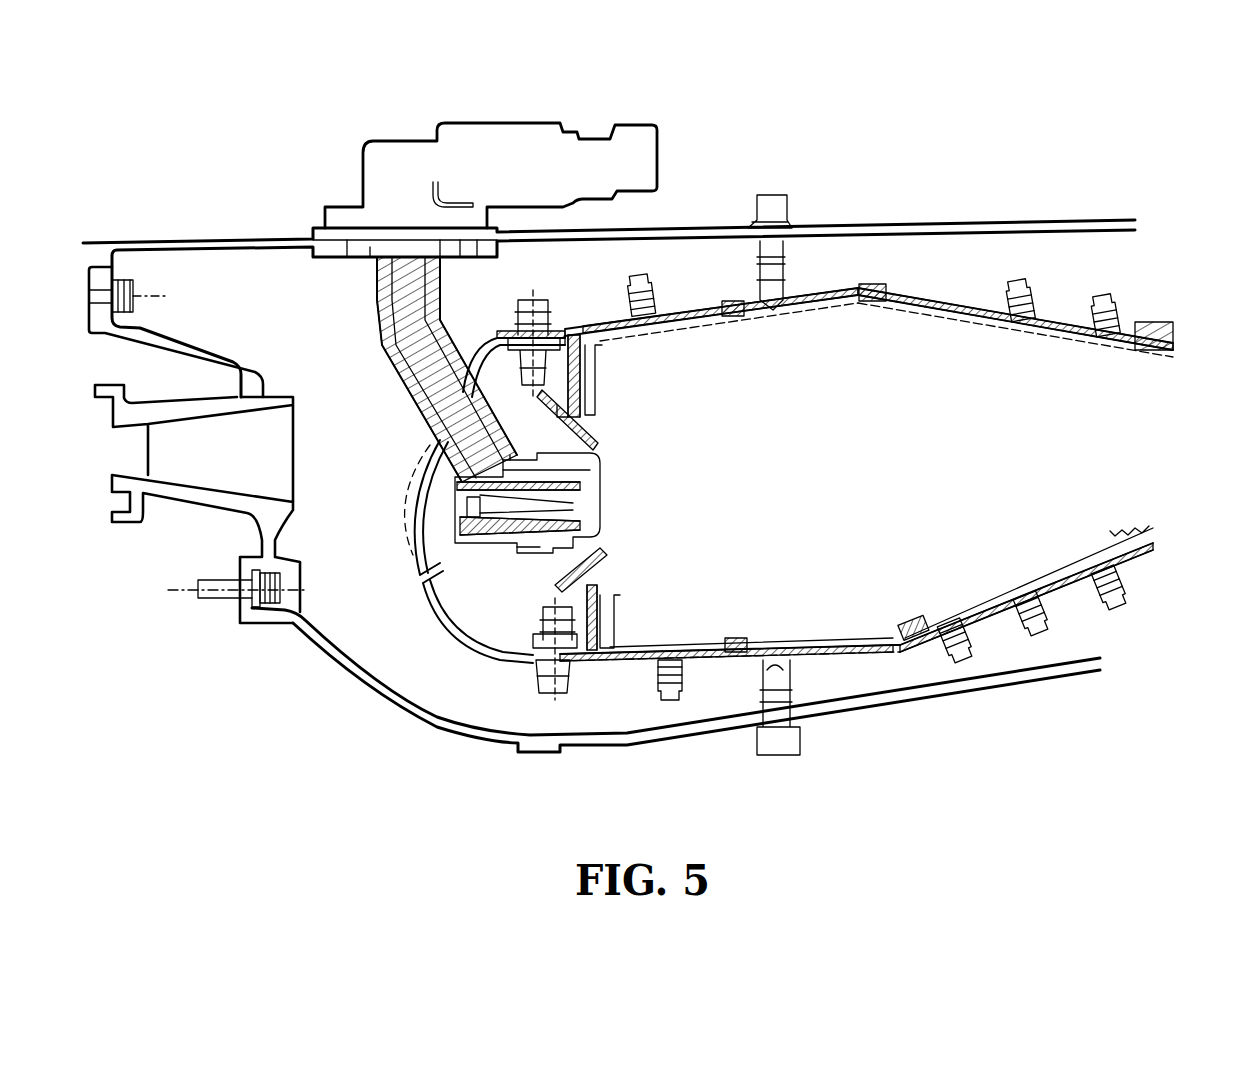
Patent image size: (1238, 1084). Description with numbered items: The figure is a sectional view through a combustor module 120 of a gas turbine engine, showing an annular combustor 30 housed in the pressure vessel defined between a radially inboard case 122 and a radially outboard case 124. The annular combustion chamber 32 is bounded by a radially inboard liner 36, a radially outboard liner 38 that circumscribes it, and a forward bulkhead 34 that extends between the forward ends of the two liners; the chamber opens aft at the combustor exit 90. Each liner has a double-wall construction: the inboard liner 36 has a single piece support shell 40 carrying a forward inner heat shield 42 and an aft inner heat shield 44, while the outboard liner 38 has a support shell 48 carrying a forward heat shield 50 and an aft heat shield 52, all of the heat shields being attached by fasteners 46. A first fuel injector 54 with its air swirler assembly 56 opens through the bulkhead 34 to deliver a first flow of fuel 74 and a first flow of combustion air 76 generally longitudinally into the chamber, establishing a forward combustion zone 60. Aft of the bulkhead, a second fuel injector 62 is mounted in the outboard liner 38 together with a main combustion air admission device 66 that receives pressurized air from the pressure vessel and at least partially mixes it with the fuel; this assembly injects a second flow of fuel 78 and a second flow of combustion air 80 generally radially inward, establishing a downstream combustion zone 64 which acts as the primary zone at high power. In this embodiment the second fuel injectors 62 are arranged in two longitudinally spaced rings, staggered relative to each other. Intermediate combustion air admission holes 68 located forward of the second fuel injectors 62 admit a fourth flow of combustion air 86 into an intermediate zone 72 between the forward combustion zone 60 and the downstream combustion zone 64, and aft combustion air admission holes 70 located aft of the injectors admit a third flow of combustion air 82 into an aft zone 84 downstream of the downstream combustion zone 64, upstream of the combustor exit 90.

The combustor module 120 is at (830, 177).
The radially outboard case 124 is at (990, 222).
The radially inboard case 122 is at (642, 743).
The annular combustor 30 is at (900, 283).
The annular combustion chamber 32 is at (702, 427).
The bulkhead 34 is at (590, 367).
The radially inboard liner 36 is at (850, 652).
The radially outboard liner 38 is at (663, 318).
The support shell 40 is at (982, 617).
The forward inner heat shield 42 is at (663, 647).
The aft inner heat shield 44 is at (1100, 547).
The fasteners 46 is at (630, 290).
The support shell 48 is at (957, 300).
The forward heat shield 50 is at (612, 337).
The aft heat shield 52 is at (1053, 330).
The first fuel injectors 54 is at (517, 500).
The air swirler assemblies 56 is at (600, 558).
The forward combustion zone 60 is at (686, 502).
The second fuel injectors 62 is at (785, 242).
The downstream combustion zone 64 is at (819, 499).
The main combustion air admission devices 66 is at (783, 288).
The intermediate combustion air admission holes 68 is at (732, 305).
The aft combustion air admission holes 70 is at (872, 290).
The intermediate zone 72 is at (770, 655).
The first flow of fuel 74 is at (680, 489).
The first flow of combustion air 76 is at (570, 458).
The second flow of fuel 78 is at (790, 250).
The second flow of combustion air 80 is at (770, 303).
The third flow of combustion air 82 is at (866, 398).
The aft zone 84 is at (880, 499).
The fourth flow of combustion air 86 is at (750, 408).
The combustor exit 90 is at (1164, 444).